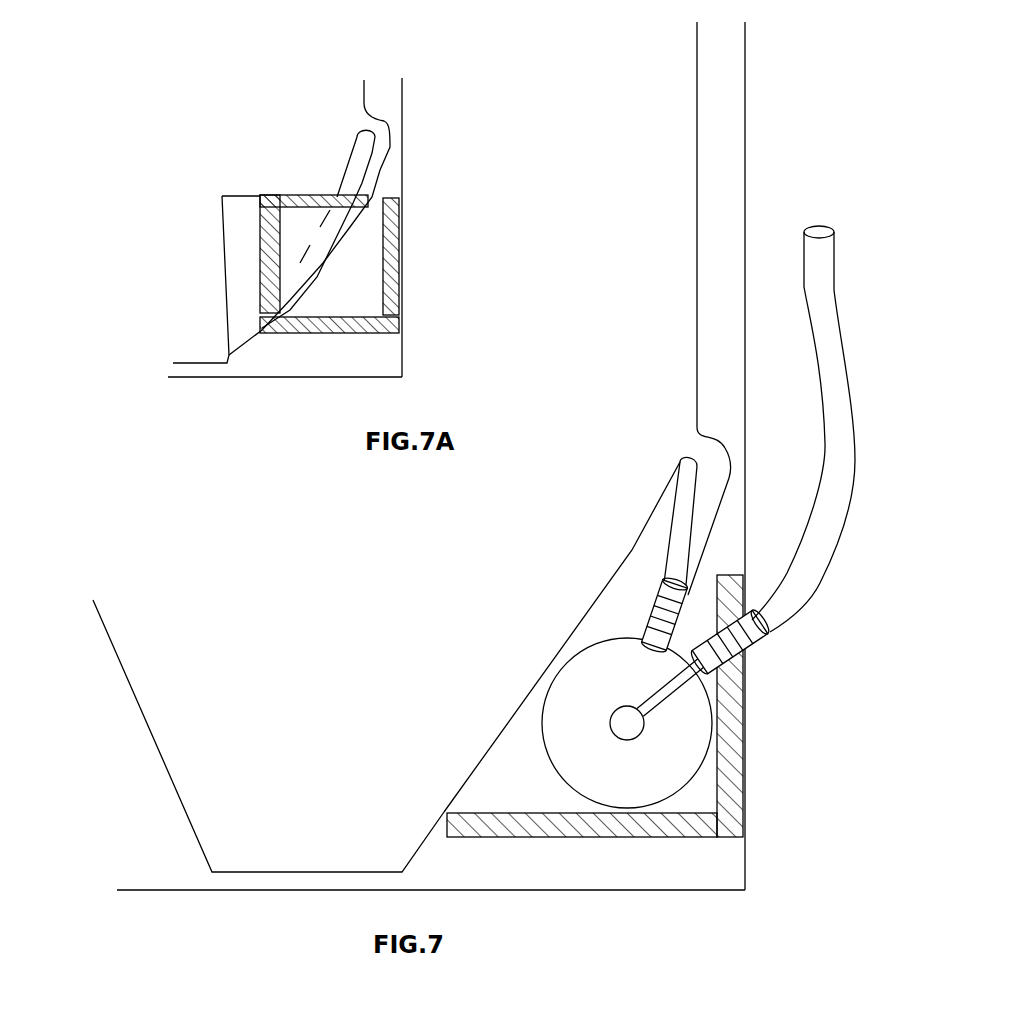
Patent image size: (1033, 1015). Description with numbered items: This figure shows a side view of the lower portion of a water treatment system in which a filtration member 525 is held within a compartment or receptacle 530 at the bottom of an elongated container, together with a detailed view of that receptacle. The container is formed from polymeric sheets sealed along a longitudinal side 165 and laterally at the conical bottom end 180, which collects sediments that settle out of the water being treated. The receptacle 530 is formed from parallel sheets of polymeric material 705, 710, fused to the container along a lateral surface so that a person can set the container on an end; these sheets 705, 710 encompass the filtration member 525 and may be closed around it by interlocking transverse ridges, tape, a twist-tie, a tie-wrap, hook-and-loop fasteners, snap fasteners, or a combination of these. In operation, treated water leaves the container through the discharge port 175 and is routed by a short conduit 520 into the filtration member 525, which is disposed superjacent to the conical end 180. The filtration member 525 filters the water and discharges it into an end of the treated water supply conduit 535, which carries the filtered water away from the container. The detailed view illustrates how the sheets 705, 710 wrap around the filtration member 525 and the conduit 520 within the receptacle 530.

In FIG. 7A, the longitudinal side 165 is at (237, 378).
In FIG. 7, the longitudinal side 165 is at (745, 165).
In FIG. 7A, the discharge port 175 is at (363, 124).
In FIG. 7, the discharge port 175 is at (690, 442).
In FIG. 7, the bottom end 180 is at (237, 872).
In FIG. 7A, the short conduit 520 is at (380, 167).
In FIG. 7, the short conduit 520 is at (712, 525).
In FIG. 7, the filtration member 525 is at (653, 742).
In FIG. 7A, the receptacle 530 is at (342, 270).
In FIG. 7, the receptacle 530 is at (552, 783).
In FIG. 7, the treated water supply conduit 535 is at (833, 385).
In FIG. 7A, the parallel sheet of polymeric material 705 is at (348, 323).
In FIG. 7, the parallel sheet of polymeric material 705 is at (653, 827).
In FIG. 7A, the parallel sheet of polymeric material 710 is at (387, 277).
In FIG. 7, the parallel sheet of polymeric material 710 is at (723, 686).